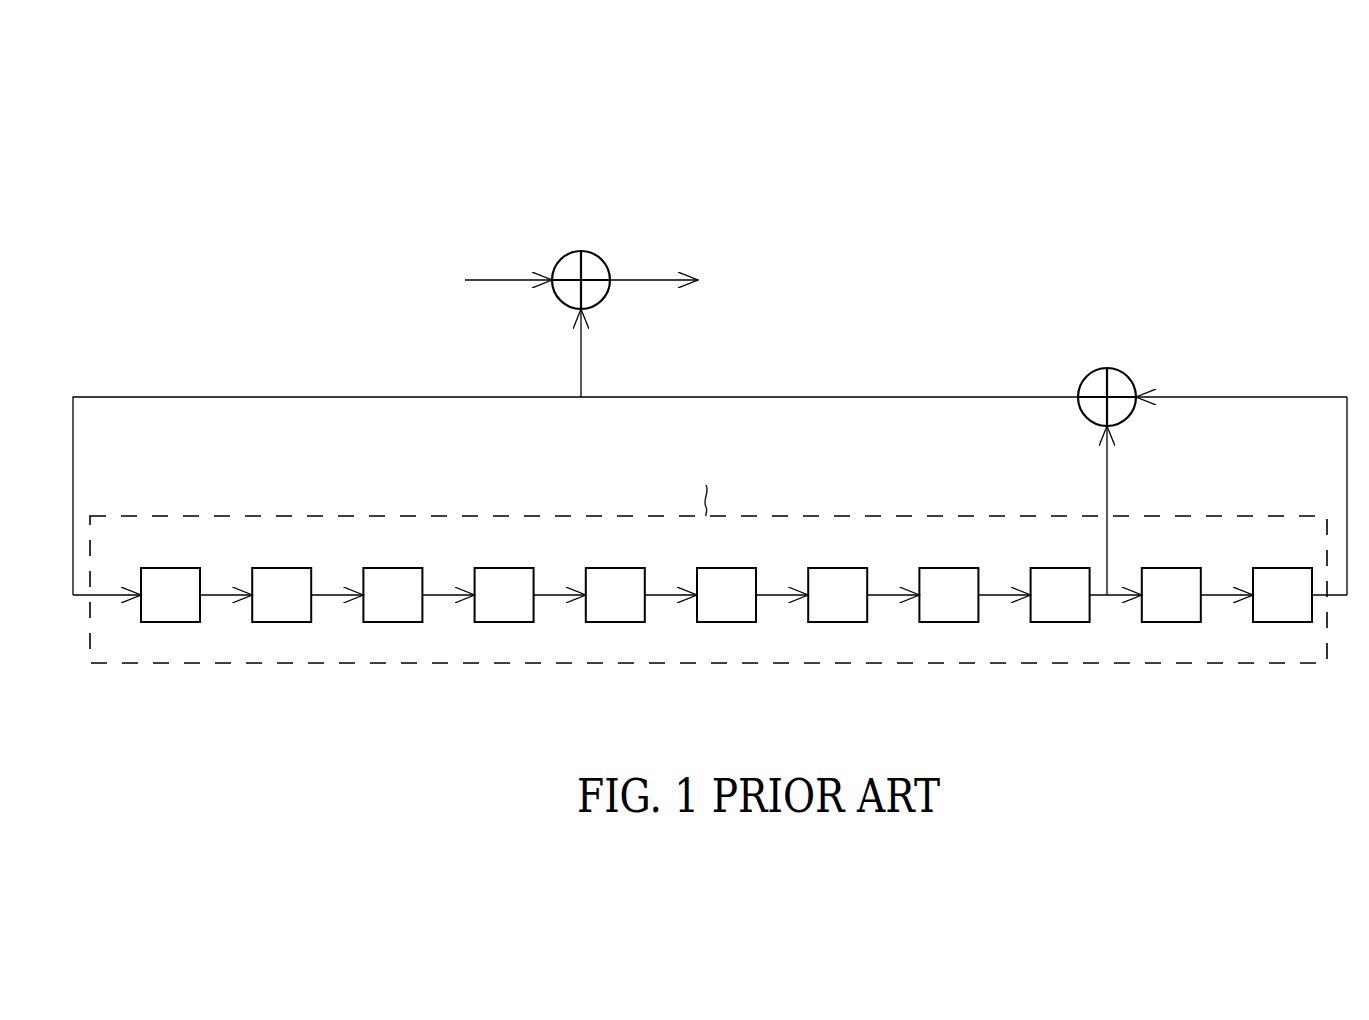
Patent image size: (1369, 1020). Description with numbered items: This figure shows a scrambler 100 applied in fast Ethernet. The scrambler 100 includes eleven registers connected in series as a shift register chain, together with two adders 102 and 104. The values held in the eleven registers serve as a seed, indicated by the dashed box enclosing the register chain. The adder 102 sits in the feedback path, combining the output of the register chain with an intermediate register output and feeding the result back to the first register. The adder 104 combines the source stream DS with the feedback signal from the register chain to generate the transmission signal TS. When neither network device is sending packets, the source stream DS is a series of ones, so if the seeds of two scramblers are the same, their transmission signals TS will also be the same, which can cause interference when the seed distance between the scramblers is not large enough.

The scrambler 100 is at (710, 368).
The adder 102 is at (1107, 368).
The adder 104 is at (580, 251).